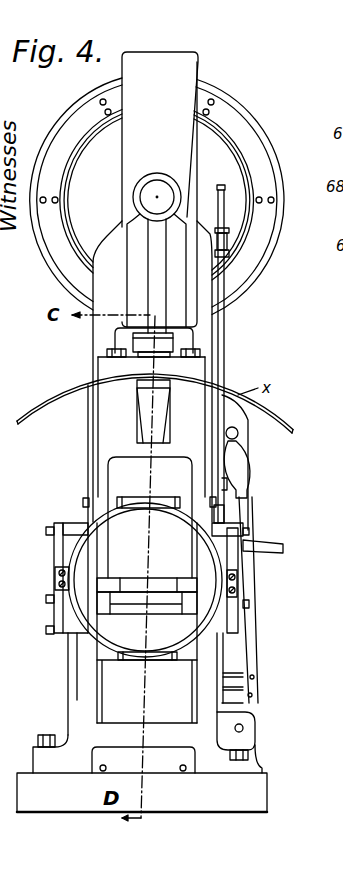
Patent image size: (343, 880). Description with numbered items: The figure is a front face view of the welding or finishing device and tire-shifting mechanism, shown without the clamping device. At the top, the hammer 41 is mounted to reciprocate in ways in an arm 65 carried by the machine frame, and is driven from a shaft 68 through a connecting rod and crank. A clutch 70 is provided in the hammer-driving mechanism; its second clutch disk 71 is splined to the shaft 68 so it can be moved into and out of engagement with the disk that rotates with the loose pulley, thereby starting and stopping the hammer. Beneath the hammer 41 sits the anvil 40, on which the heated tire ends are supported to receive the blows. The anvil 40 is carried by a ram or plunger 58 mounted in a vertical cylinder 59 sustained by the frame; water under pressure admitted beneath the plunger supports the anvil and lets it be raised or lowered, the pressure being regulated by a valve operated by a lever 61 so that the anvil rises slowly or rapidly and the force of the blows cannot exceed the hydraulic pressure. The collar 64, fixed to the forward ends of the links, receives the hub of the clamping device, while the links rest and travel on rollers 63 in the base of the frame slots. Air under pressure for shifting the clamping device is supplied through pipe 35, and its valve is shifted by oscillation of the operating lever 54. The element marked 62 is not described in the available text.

The clutch 70 is at (258, 163).
The second clutch disk 71 is at (228, 130).
The shaft 68 is at (155, 199).
The arm 65 is at (170, 297).
The hammer 41 is at (168, 346).
The pipe 35 is at (226, 360).
The anvil 40 is at (153, 395).
The operating lever 54 is at (238, 432).
The lever 61 is at (243, 466).
The collar 64 is at (78, 549).
The bracket plate 62 is at (56, 557).
The ram or plunger 58 is at (160, 588).
The rollers 63 is at (65, 607).
The vertical cylinder 59 is at (133, 682).